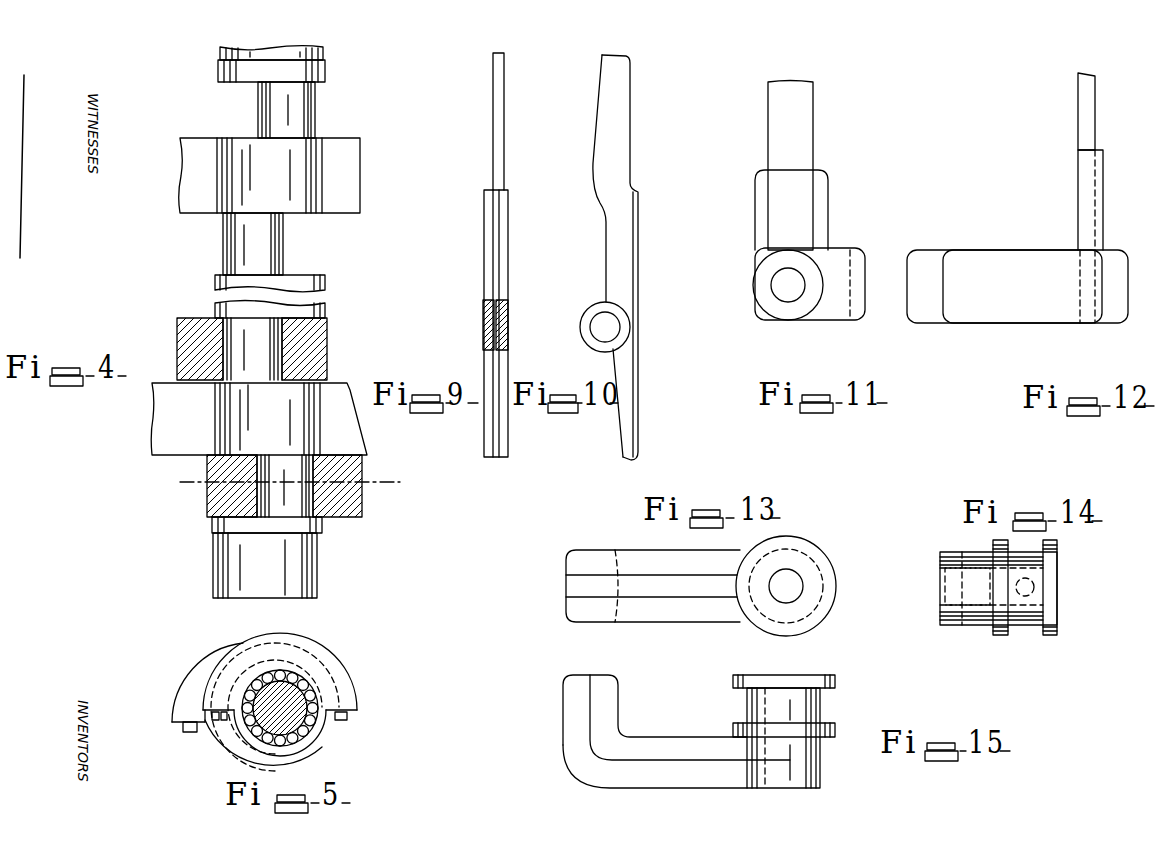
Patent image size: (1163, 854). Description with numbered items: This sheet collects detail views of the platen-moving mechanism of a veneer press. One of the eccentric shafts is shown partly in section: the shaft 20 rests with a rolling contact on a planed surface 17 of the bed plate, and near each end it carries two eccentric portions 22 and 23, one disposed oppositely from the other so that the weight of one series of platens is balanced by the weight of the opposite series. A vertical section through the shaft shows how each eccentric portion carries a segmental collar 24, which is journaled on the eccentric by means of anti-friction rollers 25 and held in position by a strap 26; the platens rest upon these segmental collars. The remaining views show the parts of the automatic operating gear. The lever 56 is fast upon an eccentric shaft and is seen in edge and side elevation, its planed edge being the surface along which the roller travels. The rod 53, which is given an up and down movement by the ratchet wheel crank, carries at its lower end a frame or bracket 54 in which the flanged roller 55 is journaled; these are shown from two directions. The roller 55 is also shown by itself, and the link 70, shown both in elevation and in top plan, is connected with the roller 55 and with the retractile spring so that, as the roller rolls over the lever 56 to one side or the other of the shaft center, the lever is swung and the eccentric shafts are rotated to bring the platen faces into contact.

In FIG. 4, the planed surface 17 is at (224, 175).
In FIG. 4, the shaft 20 is at (278, 606).
In FIG. 4, the eccentric portion 22 is at (284, 281).
In FIG. 4, the eccentric portion 23 is at (270, 296).
In FIG. 4, the segmental collar 24 is at (180, 349).
In FIG. 5, the segmental collar 24 is at (204, 673).
In FIG. 5, the anti-friction rollers 25 is at (348, 712).
In FIG. 5, the strap 26 is at (302, 728).
In FIG. 11, the rod 53 is at (790, 166).
In FIG. 12, the rod 53 is at (1092, 118).
In FIG. 11, the frame or bracket 54 is at (824, 240).
In FIG. 12, the frame or bracket 54 is at (1079, 208).
In FIG. 13, the flanged roller 55 is at (790, 538).
In FIG. 14, the flanged roller 55 is at (1035, 591).
In FIG. 15, the flanged roller 55 is at (821, 713).
In FIG. 9, the lever 56 is at (505, 258).
In FIG. 10, the lever 56 is at (606, 250).
In FIG. 13, the link 70 is at (682, 622).
In FIG. 15, the link 70 is at (676, 746).